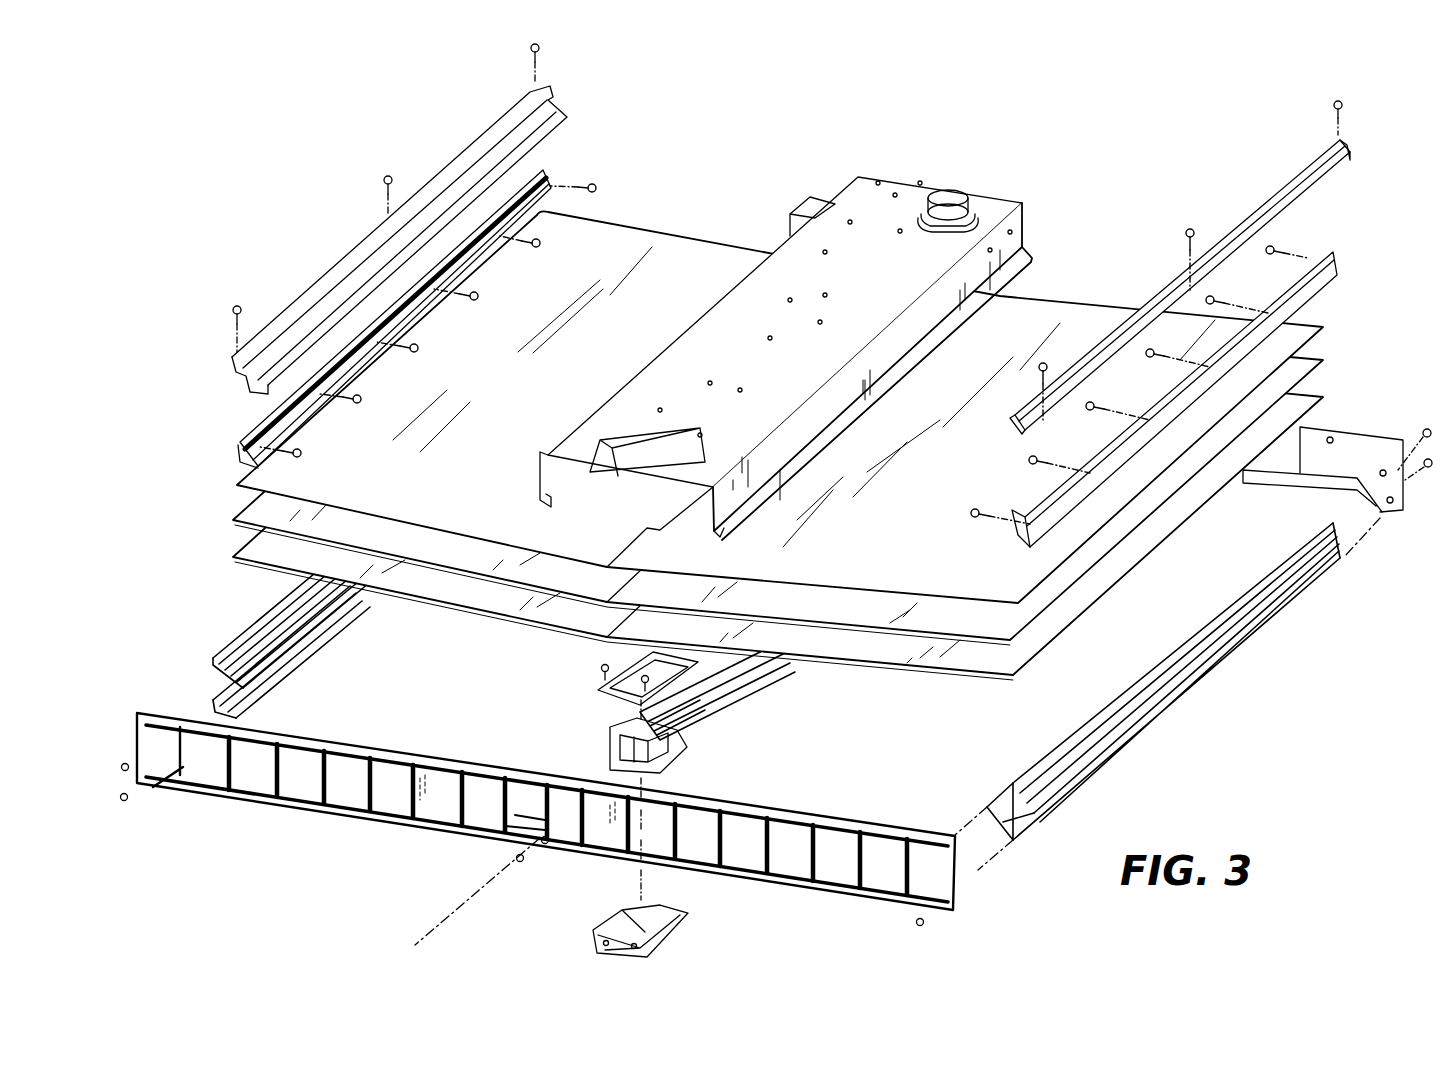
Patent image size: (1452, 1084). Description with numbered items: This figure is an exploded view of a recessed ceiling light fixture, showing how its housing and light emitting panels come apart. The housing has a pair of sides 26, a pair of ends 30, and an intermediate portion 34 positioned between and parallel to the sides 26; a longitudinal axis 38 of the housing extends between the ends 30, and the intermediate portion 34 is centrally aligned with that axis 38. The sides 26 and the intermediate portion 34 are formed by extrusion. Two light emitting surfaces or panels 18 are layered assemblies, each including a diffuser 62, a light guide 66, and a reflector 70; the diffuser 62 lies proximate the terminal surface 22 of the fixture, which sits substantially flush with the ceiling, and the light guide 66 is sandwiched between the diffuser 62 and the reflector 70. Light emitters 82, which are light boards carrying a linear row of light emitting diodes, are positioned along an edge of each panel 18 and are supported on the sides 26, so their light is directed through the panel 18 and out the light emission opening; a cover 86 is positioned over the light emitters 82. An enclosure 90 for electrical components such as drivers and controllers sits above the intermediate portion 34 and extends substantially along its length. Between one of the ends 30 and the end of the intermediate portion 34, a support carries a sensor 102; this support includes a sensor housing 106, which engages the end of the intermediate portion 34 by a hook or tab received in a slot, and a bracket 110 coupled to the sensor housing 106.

The light emitting surface 18 is at (615, 170).
The terminal surface 22 is at (1018, 843).
The side 26 is at (236, 650).
The end 30 is at (305, 738).
The intermediate portion 34 is at (720, 700).
The longitudinal axis 38 is at (465, 893).
The diffuser 62 is at (262, 549).
The light guide 66 is at (262, 506).
The reflector 70 is at (688, 282).
The light emitter 82 is at (258, 428).
The cover 86 is at (560, 110).
The enclosure 90 is at (1040, 205).
The sensor 102 is at (665, 752).
The sensor housing 106 is at (672, 938).
The bracket 110 is at (603, 676).